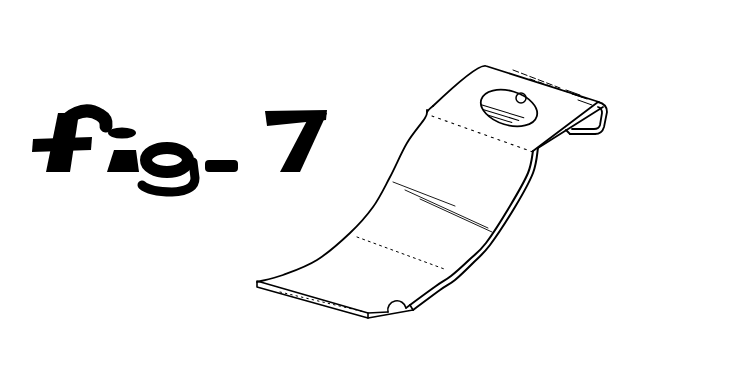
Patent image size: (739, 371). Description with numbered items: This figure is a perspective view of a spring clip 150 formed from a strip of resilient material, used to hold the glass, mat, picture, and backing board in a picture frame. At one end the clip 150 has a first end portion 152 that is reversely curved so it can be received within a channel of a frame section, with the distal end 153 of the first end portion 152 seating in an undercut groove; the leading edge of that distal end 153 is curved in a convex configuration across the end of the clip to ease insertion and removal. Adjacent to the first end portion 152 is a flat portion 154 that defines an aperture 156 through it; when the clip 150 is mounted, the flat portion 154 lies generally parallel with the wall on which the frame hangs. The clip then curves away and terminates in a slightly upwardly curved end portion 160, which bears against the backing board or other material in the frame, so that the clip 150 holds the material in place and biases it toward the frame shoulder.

The spring clip 150 is at (485, 269).
The first end portion 152 is at (600, 135).
The lip of hook 153 is at (568, 137).
The flat portion 154 is at (470, 102).
The aperture 156 is at (522, 100).
The end portion 160 is at (410, 304).